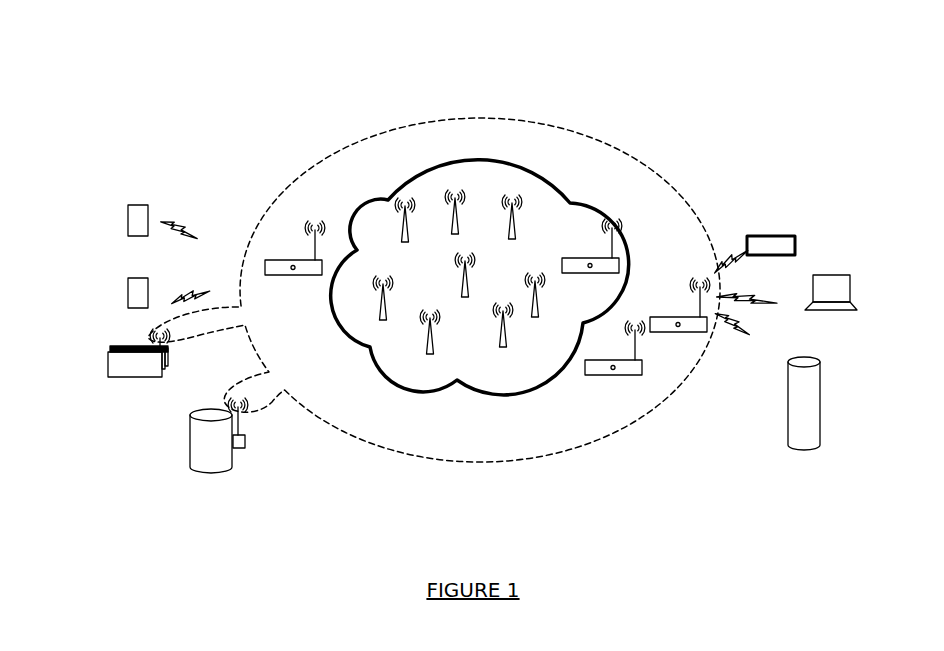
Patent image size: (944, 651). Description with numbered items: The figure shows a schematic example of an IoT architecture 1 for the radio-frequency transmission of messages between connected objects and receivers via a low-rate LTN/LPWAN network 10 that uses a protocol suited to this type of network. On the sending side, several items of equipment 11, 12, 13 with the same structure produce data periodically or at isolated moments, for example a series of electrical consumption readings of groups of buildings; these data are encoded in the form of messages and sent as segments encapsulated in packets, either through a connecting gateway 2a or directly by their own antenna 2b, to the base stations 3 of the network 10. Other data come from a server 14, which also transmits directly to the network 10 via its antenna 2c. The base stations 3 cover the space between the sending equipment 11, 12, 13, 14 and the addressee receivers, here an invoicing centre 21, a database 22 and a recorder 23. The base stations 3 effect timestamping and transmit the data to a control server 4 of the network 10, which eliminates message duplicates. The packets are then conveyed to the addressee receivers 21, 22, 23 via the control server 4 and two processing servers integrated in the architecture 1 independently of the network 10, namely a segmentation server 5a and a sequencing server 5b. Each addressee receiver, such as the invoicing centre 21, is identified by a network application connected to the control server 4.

The IoT architecture 1 is at (434, 234).
The low-rate LTN/LPWAN network 10 is at (402, 185).
The connecting gateway 2a is at (283, 260).
The antenna 2b is at (168, 348).
The antenna 2c is at (251, 451).
The base stations 3 is at (512, 204).
The control server 4 is at (593, 258).
The segmentation server 5a is at (627, 375).
The sequencing server 5b is at (688, 332).
The item of equipment 11 is at (138, 205).
The item of equipment 12 is at (130, 278).
The item of equipment 13 is at (128, 367).
The server 14 is at (200, 443).
The invoicing centre 21 is at (780, 236).
The database 22 is at (845, 275).
The recorder 23 is at (787, 427).